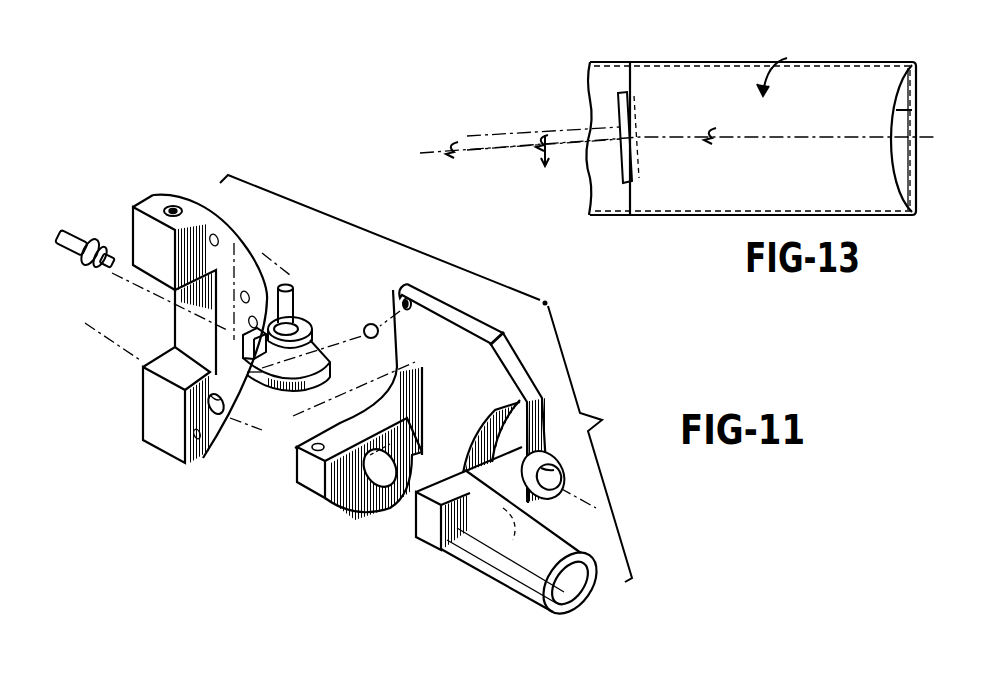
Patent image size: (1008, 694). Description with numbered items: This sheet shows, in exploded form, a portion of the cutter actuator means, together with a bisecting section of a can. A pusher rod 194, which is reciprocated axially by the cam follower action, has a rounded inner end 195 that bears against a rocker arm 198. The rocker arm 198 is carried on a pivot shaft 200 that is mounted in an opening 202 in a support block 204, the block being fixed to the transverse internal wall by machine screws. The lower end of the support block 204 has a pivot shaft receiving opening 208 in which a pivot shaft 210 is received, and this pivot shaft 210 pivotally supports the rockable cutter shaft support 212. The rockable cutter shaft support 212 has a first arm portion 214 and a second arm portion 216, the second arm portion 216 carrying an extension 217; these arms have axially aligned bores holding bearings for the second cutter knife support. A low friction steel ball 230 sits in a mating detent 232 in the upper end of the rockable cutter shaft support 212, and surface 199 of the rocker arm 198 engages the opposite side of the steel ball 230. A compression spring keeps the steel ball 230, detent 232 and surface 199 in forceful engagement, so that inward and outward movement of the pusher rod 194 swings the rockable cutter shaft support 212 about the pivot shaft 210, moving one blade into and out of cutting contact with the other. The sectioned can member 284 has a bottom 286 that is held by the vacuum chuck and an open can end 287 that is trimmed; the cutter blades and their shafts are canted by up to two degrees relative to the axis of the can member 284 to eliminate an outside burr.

In FIG. 11, the pusher rod 194 is at (82, 237).
In FIG. 11, the inner end 195 is at (120, 272).
In FIG. 11, the rocker arm 198 is at (275, 383).
In FIG. 11, the surface 199 is at (330, 365).
In FIG. 11, the pivot shaft 200 is at (296, 302).
In FIG. 11, the opening 202 is at (171, 206).
In FIG. 11, the support block 204 is at (232, 240).
In FIG. 11, the pivot shaft receiving opening 208 is at (217, 412).
In FIG. 11, the pivot shaft 210 is at (557, 490).
In FIG. 11, the rockable cutter shaft support 212 is at (478, 327).
In FIG. 11, the first arm portion 214 is at (313, 473).
In FIG. 11, the second arm portion 216 is at (430, 537).
In FIG. 11, the extension 217 is at (517, 587).
In FIG. 11, the steel ball 230 is at (378, 334).
In FIG. 11, the detent 232 is at (405, 303).
In FIG. 13, the can member 284 is at (878, 62).
In FIG. 13, the bottom 286 is at (893, 124).
In FIG. 13, the can end 287 is at (600, 61).